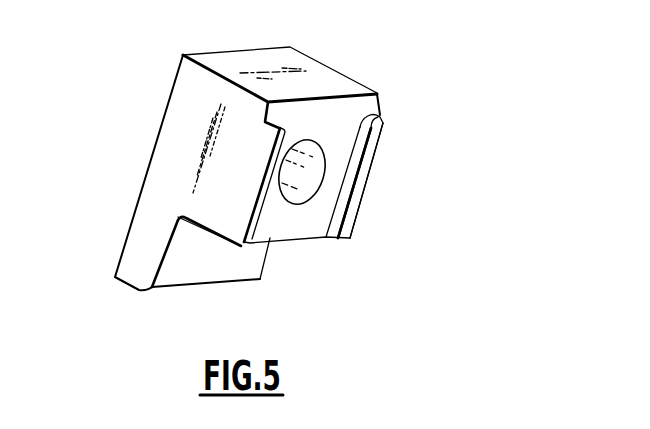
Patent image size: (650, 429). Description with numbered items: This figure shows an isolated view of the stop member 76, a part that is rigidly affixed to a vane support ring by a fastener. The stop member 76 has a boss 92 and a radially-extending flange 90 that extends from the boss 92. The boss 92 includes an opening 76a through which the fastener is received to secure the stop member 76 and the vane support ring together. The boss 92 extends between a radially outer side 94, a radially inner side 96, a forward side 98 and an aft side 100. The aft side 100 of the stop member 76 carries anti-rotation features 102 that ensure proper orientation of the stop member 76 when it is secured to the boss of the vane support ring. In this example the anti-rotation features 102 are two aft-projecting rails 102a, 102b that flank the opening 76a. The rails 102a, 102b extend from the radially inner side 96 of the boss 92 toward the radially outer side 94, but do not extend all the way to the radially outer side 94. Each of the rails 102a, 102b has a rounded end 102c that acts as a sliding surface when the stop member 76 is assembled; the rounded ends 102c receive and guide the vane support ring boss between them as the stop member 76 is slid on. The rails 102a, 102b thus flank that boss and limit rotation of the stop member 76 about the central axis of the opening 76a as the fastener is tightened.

The stop member 76 is at (127, 237).
The opening 76a is at (288, 195).
The radially-extending flange 90 is at (170, 270).
The boss 92 is at (352, 100).
The radially outer side 94 is at (300, 67).
The radially inner side 96 is at (293, 238).
The forward side 98 is at (176, 77).
The aft side 100 is at (340, 130).
The anti-rotation features 102 is at (361, 200).
The aft-projecting rail 102a is at (368, 158).
The aft-projecting rail 102b is at (252, 240).
The rounded end 102c is at (282, 127).